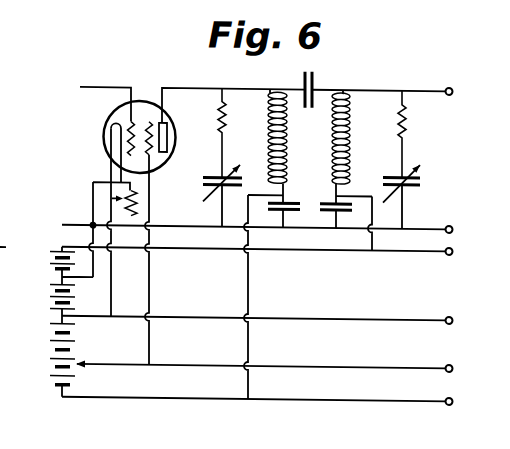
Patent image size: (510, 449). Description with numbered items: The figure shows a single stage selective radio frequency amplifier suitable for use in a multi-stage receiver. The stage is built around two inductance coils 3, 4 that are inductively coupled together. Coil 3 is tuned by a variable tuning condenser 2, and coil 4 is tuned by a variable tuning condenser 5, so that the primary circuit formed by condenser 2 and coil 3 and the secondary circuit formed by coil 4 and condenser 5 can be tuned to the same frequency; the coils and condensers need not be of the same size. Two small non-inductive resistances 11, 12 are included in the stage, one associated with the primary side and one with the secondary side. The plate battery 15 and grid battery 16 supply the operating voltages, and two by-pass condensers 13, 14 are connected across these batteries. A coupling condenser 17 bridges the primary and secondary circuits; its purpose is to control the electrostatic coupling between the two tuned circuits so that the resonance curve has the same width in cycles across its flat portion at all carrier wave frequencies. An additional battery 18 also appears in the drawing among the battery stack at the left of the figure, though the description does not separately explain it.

The variable tuning condenser 2 is at (210, 175).
The inductance coil 3 is at (285, 143).
The inductance coil 4 is at (333, 133).
The variable tuning condenser 5 is at (420, 179).
The non-inductive resistance 11 is at (235, 133).
The non-inductive resistance 12 is at (405, 128).
The by-pass condenser 13 is at (299, 201).
The by-pass condenser 14 is at (331, 196).
The plate battery 15 is at (48, 334).
The grid battery 16 is at (50, 271).
The coupling condenser 17 is at (314, 82).
The battery 18 is at (50, 306).